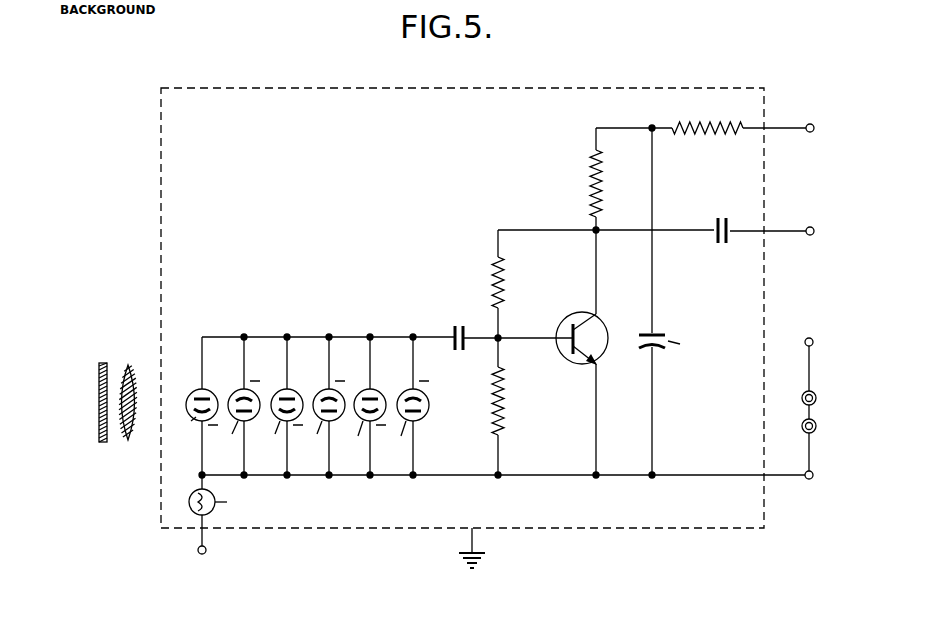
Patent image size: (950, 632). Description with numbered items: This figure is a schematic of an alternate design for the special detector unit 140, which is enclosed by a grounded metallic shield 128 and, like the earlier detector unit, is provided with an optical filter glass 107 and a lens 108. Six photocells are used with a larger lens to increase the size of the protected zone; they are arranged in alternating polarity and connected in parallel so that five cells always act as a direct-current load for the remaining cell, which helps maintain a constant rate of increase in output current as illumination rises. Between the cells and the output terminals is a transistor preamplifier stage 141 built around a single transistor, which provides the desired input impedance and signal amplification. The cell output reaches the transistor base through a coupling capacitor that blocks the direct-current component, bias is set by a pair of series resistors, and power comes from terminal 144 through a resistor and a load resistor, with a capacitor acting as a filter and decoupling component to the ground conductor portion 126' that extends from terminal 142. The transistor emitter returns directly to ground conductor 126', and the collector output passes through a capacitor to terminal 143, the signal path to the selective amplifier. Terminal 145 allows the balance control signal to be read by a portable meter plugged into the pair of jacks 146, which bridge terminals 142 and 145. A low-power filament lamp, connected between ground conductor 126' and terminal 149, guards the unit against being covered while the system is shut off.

The optical filter glass 107 is at (99, 397).
The lens 108 is at (128, 440).
The special detector unit 140 is at (312, 70).
The grounded metallic shield 128 is at (580, 88).
The transistor preamplifier stage 141 is at (554, 281).
The terminal 142 is at (813, 475).
The terminal 143 is at (814, 231).
The terminal 144 is at (814, 128).
The terminal 145 is at (813, 342).
The jacks 146 is at (816, 411).
The terminal 149 is at (206, 550).
The portion of the ground conductor 126' is at (502, 491).